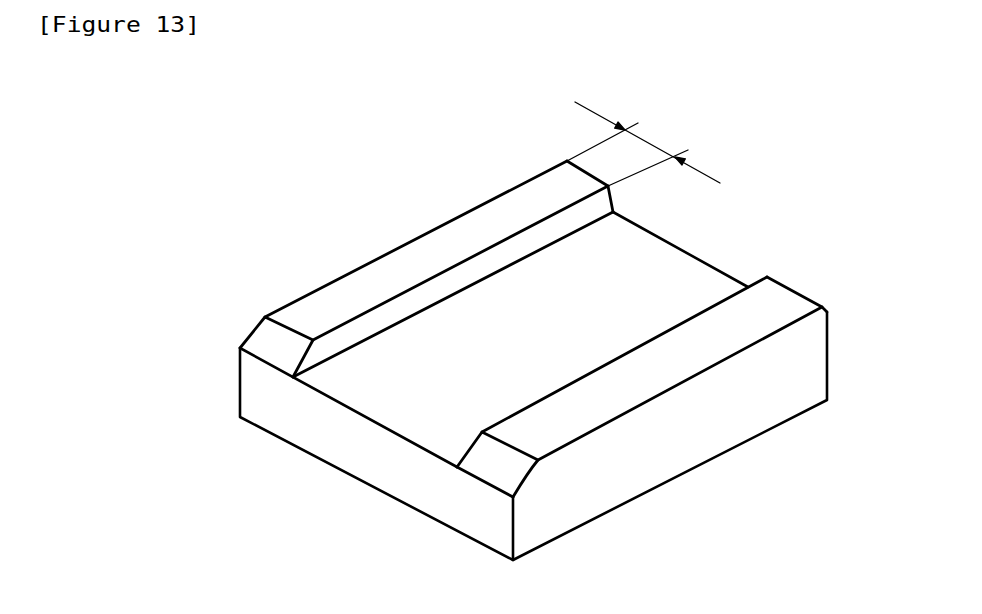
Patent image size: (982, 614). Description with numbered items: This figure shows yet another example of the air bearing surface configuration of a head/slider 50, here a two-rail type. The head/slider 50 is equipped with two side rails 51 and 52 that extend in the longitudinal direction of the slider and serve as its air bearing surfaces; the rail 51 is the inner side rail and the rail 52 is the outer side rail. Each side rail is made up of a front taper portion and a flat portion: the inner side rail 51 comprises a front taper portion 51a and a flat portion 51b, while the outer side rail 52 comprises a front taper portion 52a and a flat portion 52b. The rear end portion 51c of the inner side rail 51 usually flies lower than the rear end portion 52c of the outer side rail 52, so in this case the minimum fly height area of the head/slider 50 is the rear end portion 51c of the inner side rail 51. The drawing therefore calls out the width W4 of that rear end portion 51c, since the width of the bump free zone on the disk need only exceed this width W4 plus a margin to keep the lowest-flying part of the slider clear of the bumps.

The head/slider 50 is at (354, 144).
The inner side rail 51 is at (387, 240).
The front taper portion 51a is at (267, 342).
The flat portion 51b is at (453, 235).
The rear end portion 51c is at (595, 173).
The outer side rail 52 is at (628, 400).
The front taper portion 52a is at (488, 465).
The flat portion 52b is at (638, 392).
The rear end portion 52c is at (800, 295).
The width of the rear end portion W4 is at (643, 144).